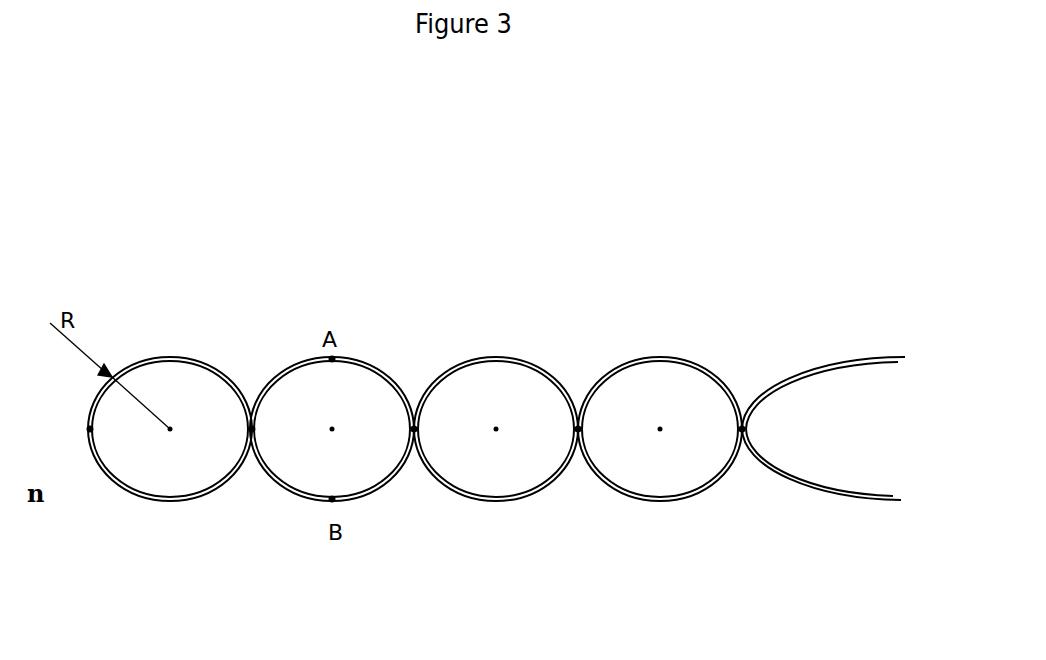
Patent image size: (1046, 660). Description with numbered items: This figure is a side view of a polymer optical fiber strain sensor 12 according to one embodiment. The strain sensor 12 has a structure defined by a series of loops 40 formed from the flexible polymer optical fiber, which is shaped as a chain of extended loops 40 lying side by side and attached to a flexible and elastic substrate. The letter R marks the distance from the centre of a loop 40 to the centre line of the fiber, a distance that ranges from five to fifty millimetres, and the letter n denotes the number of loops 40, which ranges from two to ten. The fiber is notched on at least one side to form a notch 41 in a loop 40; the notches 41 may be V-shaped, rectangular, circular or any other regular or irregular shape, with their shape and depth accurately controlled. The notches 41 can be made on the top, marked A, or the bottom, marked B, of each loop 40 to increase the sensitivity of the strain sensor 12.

The strain sensor 12 is at (267, 235).
The loop 40 is at (485, 358).
The notch 41 is at (333, 358).